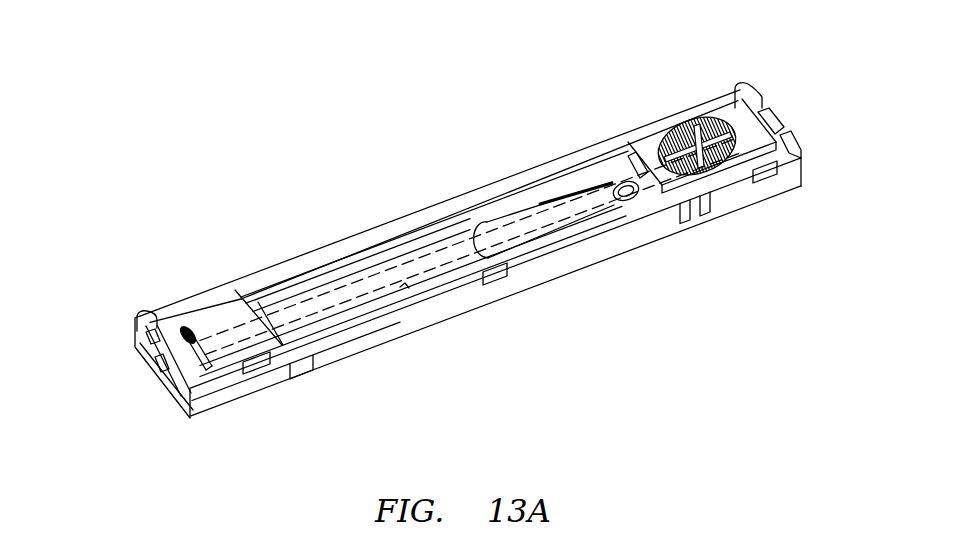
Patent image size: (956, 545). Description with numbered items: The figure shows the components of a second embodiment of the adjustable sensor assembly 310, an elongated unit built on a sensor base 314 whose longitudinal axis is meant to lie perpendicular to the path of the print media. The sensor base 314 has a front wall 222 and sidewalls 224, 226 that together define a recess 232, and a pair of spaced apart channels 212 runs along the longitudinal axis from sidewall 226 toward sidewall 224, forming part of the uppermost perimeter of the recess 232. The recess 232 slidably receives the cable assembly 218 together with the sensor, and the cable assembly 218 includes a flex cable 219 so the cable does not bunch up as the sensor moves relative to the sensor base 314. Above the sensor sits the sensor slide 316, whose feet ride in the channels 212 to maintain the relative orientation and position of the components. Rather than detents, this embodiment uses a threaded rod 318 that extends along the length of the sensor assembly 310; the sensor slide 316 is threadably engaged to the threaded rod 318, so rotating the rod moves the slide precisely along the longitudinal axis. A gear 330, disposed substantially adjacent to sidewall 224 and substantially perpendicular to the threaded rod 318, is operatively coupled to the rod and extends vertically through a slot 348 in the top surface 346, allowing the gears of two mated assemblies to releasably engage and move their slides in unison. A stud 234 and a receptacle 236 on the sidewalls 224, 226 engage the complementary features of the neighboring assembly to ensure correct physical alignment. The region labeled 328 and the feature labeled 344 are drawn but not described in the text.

The sensor assembly 310 is at (247, 247).
The sensor base 314 is at (317, 244).
The top surface 346 is at (217, 305).
The channel 212 is at (427, 220).
The channel 328 is at (362, 266).
The threaded rod 318 is at (232, 348).
The cable assembly 218 is at (487, 223).
The flex cable 219 is at (563, 190).
The sensor slide 316 is at (720, 110).
The sensor target 344 is at (677, 130).
The stud 234 is at (133, 320).
The sidewall 226 is at (777, 118).
The receptacle 236 is at (177, 385).
The sidewall 224 is at (150, 353).
The slot 348 is at (183, 332).
The gear 330 is at (190, 330).
The front wall 222 is at (525, 292).
The recess 232 is at (406, 286).